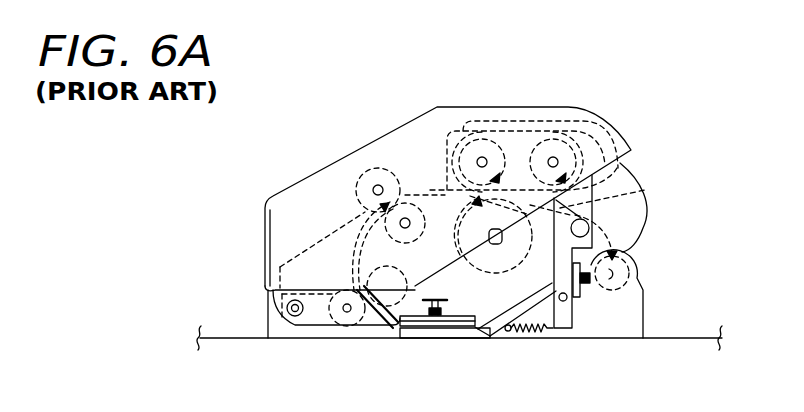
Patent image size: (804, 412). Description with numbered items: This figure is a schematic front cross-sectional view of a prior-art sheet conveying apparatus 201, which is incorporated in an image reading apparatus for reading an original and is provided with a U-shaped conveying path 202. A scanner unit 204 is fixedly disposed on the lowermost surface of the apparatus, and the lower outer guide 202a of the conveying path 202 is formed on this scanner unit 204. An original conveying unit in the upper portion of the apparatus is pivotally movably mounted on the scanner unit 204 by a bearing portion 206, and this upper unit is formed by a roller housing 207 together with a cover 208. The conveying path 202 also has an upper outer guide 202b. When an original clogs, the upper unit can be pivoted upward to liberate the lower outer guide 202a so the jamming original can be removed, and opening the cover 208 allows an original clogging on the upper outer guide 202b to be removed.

The sheet conveying apparatus 201 is at (563, 101).
The conveying path 202 is at (415, 190).
The lower outer guide 202a is at (487, 331).
The upper outer guide 202b is at (444, 190).
The scanner unit 204 is at (313, 340).
The bearing portion 206 is at (294, 312).
The roller housing 207 is at (647, 192).
The cover 208 is at (336, 168).